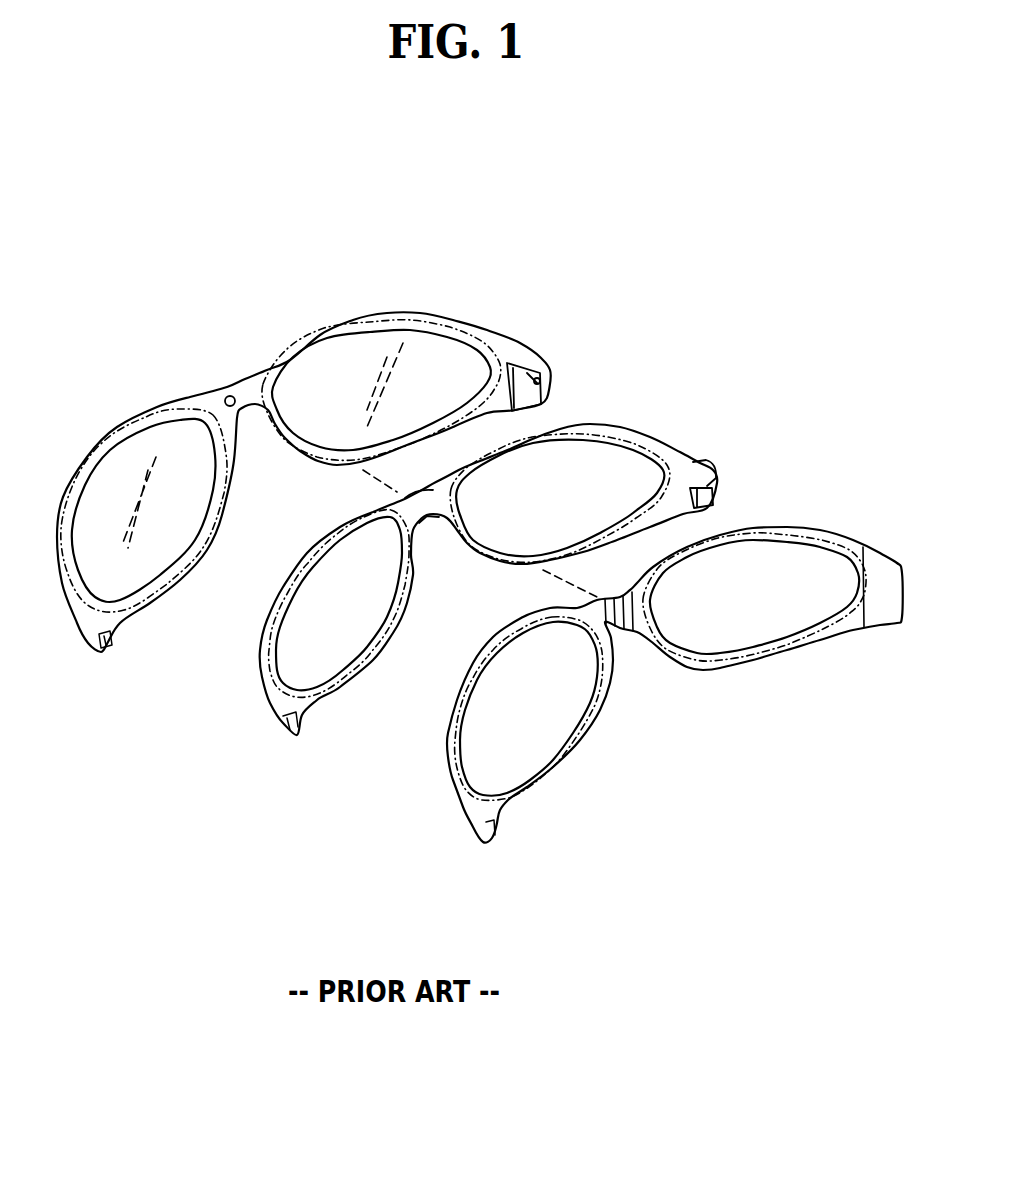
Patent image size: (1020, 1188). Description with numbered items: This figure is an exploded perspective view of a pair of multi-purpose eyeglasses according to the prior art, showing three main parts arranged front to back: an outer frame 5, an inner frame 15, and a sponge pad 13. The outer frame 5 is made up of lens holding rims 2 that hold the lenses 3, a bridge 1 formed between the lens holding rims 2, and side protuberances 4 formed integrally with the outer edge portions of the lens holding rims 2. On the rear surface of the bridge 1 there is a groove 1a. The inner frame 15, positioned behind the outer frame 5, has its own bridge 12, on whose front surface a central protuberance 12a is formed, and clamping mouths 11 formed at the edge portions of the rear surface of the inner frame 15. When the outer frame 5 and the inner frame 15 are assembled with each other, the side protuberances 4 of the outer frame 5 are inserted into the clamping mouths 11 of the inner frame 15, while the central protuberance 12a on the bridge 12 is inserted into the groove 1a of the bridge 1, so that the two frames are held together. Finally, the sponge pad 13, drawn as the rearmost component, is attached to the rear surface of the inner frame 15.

The bridge 1 is at (230, 385).
The groove 1a is at (240, 410).
The lens holding rims 2 is at (207, 497).
The lenses 3 is at (431, 355).
The side protuberances 4 is at (536, 366).
The outer frame 5 is at (364, 303).
The clamping mouths 11 is at (700, 486).
The bridge 12 is at (433, 520).
The central protuberance 12a is at (420, 490).
The sponge pad 13 is at (853, 540).
The inner frame 15 is at (690, 435).